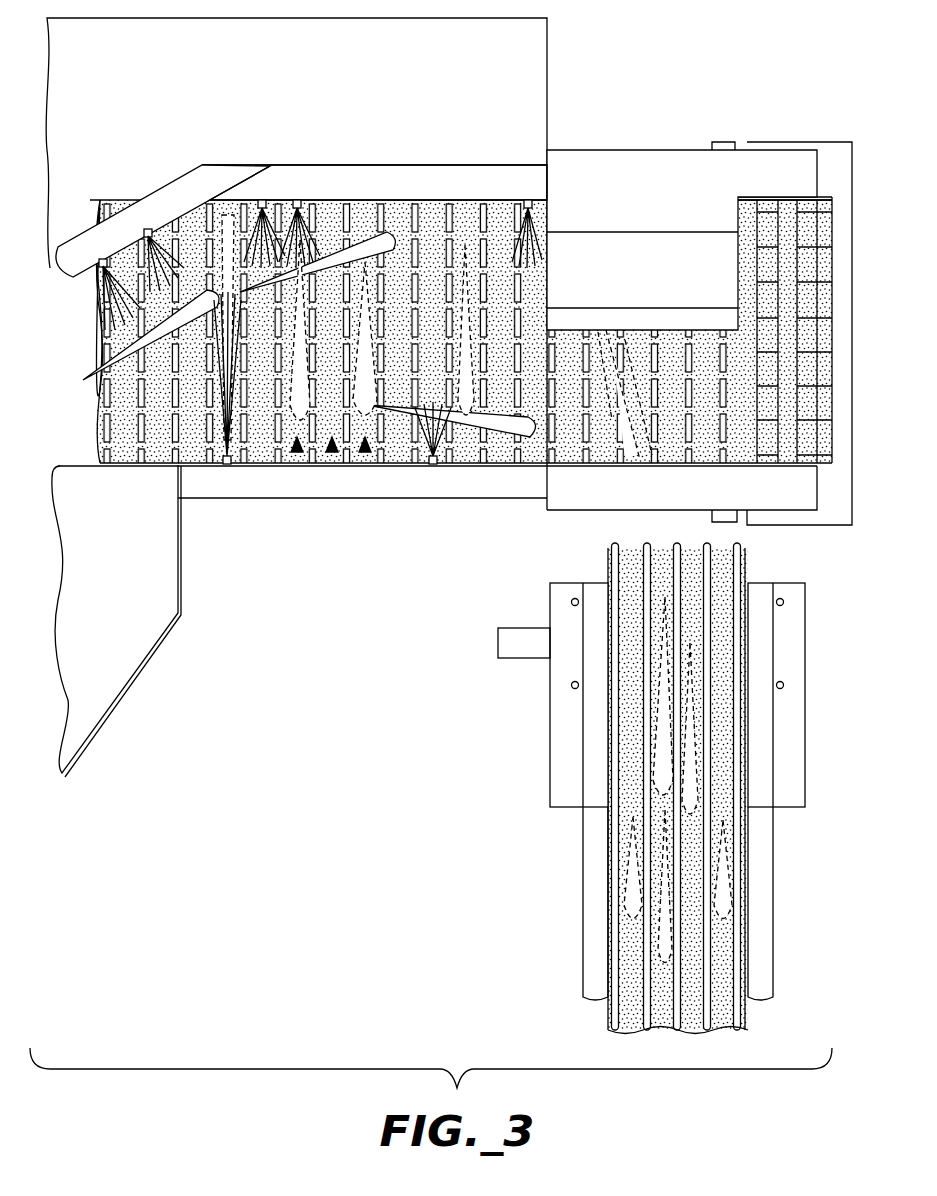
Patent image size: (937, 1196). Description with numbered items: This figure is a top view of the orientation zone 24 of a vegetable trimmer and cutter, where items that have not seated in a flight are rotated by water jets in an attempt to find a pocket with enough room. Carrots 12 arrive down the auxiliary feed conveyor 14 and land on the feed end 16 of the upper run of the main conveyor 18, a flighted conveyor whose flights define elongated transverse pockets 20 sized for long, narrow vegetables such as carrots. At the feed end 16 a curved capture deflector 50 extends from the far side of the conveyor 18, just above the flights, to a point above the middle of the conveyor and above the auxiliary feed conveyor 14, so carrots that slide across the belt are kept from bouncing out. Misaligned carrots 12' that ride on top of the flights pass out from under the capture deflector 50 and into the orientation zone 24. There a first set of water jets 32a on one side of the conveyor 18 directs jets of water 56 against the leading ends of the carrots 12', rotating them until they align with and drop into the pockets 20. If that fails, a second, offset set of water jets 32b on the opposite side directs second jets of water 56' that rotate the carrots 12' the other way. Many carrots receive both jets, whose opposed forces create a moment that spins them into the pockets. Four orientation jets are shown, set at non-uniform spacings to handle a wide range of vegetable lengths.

The carrots 12 is at (445, 466).
The misaligned carrots 12' is at (458, 508).
The auxiliary feed conveyor 14 is at (566, 851).
The feed end 16 is at (660, 80).
The main conveyor 18 is at (226, 210).
The transverse pockets 20 is at (365, 450).
The orientation zone 24 is at (392, 143).
The first set of water jets 32a is at (408, 175).
The second set of water jets 32b is at (452, 490).
The capture deflector 50 is at (658, 286).
The jets of water 56 is at (416, 203).
The second jets of water 56' is at (316, 417).